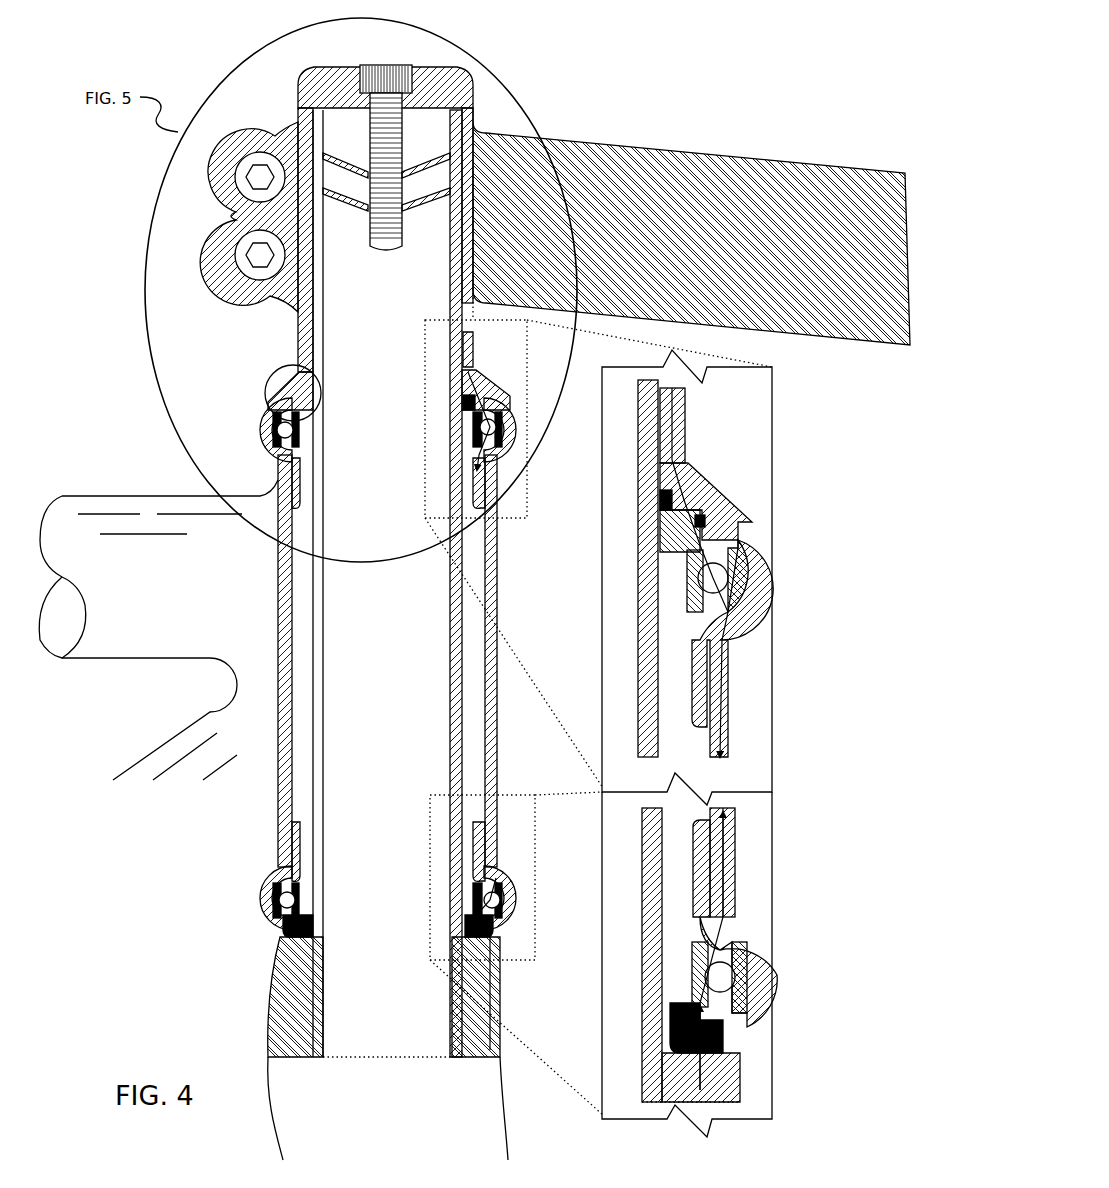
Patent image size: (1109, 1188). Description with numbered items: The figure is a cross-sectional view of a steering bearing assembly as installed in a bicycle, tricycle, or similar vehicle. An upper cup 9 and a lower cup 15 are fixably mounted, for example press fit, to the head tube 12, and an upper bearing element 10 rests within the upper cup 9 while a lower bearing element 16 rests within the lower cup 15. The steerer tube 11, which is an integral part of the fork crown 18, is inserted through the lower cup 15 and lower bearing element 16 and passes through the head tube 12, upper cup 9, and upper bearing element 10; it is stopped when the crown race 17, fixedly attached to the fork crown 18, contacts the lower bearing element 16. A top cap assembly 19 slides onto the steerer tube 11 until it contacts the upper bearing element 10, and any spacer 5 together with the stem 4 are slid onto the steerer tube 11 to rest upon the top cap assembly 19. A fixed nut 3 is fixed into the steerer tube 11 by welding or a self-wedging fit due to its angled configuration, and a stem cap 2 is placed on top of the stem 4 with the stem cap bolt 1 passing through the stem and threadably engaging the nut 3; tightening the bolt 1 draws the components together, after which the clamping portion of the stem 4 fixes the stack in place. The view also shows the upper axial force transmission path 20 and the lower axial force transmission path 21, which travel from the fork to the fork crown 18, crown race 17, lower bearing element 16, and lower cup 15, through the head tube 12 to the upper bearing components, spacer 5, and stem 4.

The stem cap bolt 1 is at (388, 70).
The stem cap 2 is at (342, 76).
The fixed nut 3 is at (408, 167).
The stem 4 is at (228, 240).
The spacer 5 is at (300, 348).
The upper cup 9 is at (270, 435).
The upper bearing element 10 is at (299, 437).
The steerer tube 11 is at (320, 626).
The head tube 12 is at (292, 531).
The lower cup 15 is at (270, 912).
The lower bearing element 16 is at (305, 912).
The crown race 17 is at (303, 930).
The fork crown 18 is at (288, 1020).
The top cap assembly 19 is at (268, 402).
The upper axial force transmission path 20 is at (695, 487).
The lower axial force transmission path 21 is at (735, 927).